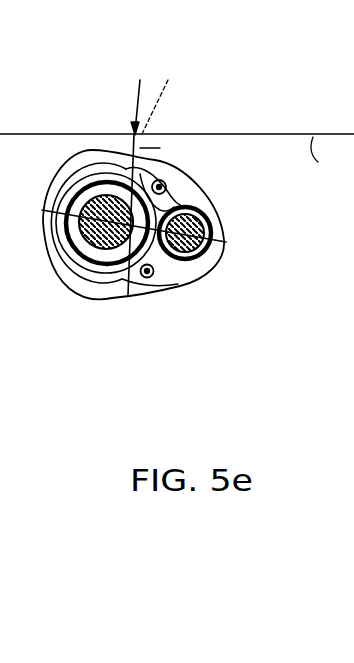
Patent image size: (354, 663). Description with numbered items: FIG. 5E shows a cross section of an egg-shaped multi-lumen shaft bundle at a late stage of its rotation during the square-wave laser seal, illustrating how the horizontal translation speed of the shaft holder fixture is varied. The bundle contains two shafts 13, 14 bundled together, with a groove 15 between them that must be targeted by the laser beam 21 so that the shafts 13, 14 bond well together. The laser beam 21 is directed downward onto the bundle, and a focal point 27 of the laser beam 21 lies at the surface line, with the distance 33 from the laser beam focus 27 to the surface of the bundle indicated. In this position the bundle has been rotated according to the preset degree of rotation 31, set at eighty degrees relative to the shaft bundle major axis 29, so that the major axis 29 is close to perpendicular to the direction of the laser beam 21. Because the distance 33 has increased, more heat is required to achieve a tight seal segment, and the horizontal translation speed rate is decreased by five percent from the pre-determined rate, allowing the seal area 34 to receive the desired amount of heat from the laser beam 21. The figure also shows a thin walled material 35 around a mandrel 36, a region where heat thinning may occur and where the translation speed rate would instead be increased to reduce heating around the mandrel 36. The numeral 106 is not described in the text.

The shaft 13 is at (88, 246).
The shaft 14 is at (230, 207).
The groove 15 is at (170, 195).
The laser beam 21 is at (136, 96).
The focal point of the laser beam 27 is at (318, 166).
The shaft bundle major axis 29 is at (127, 218).
The preset degree of rotation 31 is at (188, 343).
The distance from the laser beam focus to the surface 33 is at (165, 104).
The seal area 34 is at (160, 149).
The thin walled material 35 is at (146, 279).
The mandrel 36 is at (178, 282).
The housing 106 is at (216, 273).